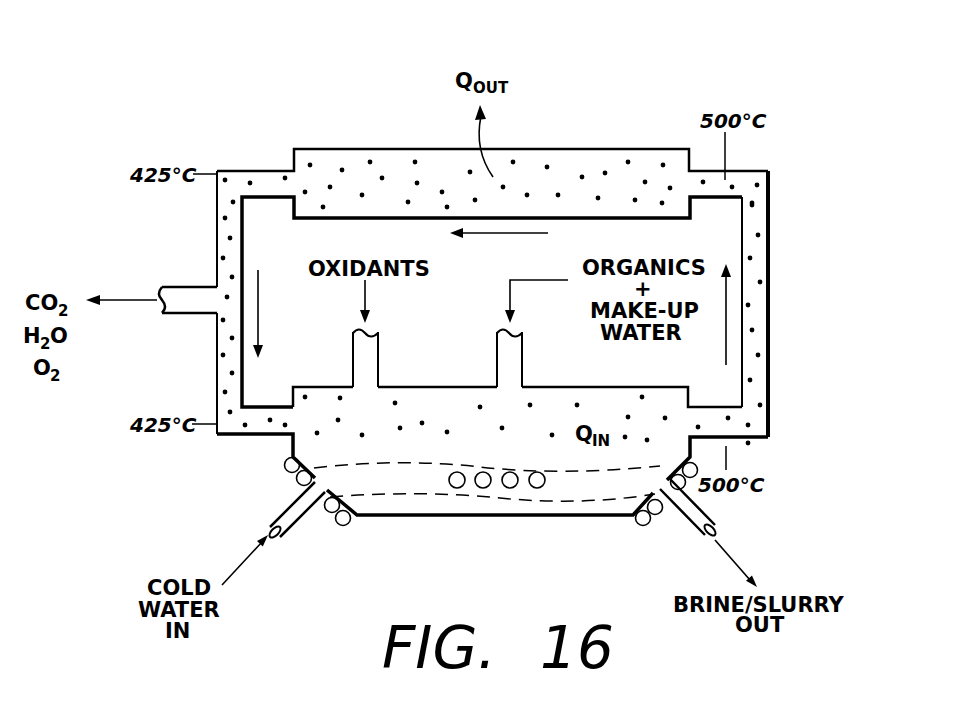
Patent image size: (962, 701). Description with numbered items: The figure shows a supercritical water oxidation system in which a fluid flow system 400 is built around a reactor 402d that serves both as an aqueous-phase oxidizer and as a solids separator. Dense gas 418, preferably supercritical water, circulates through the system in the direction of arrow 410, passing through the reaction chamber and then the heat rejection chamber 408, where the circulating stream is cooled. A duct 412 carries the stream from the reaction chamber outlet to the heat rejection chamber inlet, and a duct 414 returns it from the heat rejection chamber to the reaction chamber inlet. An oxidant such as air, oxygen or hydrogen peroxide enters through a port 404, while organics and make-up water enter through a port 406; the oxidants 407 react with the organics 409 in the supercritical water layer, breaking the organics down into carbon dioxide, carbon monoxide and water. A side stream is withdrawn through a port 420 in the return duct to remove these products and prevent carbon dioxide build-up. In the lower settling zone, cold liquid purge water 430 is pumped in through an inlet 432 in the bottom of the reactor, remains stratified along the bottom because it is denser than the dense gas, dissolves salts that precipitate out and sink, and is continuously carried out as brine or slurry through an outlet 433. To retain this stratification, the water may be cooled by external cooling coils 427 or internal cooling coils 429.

The fluid flow system 400 is at (656, 75).
The reactor 402d is at (410, 387).
The port 404 is at (353, 370).
The port 406 is at (523, 364).
The oxidants 407 is at (366, 290).
The heat rejection chamber 408 is at (545, 150).
The organics 409 is at (522, 283).
The arrow 410 is at (483, 235).
The duct 412 is at (770, 221).
The duct 414 is at (217, 228).
The dense gas 418 is at (758, 330).
The port 420 is at (203, 317).
The external cooling coils 427 is at (297, 482).
The internal cooling coils 429 is at (483, 490).
The purge water 430 is at (237, 569).
The inlet 432 is at (300, 520).
The outlet 433 is at (708, 522).